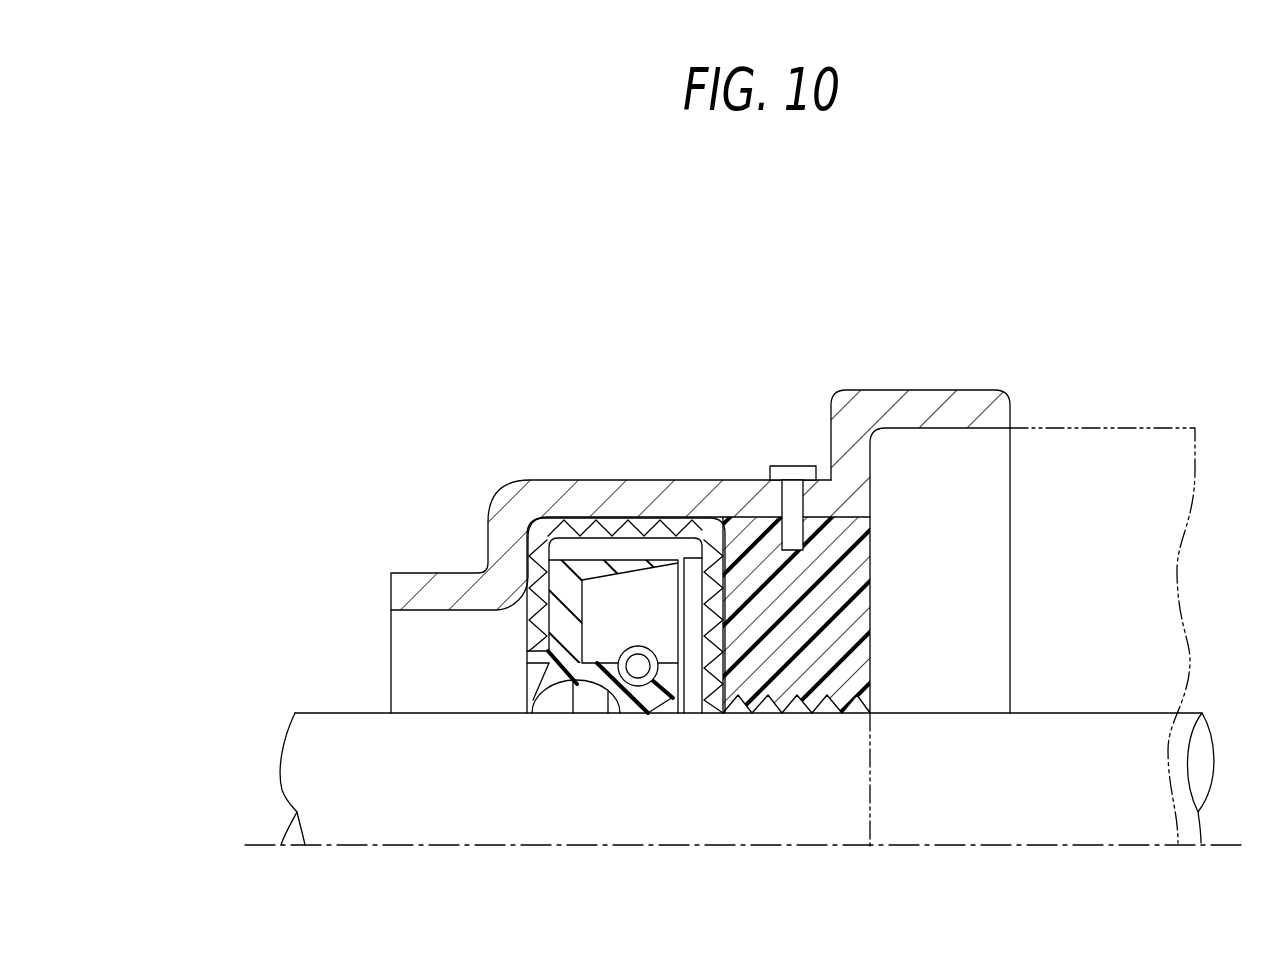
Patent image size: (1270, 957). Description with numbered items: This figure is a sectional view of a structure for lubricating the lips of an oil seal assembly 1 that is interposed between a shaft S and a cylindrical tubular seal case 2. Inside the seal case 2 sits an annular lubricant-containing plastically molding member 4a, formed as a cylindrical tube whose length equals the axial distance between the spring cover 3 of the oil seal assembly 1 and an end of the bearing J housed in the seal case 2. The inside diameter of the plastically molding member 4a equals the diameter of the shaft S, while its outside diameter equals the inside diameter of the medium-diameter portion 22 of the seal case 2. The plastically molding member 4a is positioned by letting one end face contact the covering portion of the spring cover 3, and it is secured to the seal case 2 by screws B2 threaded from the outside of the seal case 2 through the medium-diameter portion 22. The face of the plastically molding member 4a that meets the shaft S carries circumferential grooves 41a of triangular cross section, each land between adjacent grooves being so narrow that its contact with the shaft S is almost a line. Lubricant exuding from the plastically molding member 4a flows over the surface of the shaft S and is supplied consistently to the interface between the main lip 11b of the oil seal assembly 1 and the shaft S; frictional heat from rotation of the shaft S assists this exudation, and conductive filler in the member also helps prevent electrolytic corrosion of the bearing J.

The oil seal assembly 1 is at (529, 744).
The seal case 2 is at (560, 475).
The medium-diameter portion 22 is at (637, 497).
The spring cover 3 is at (700, 498).
The plastically molding member 4a is at (796, 662).
The circumferential grooves 41a is at (787, 713).
The main lip 11b is at (647, 700).
The screws B2 is at (793, 470).
The bearing J is at (1100, 427).
The shaft S is at (335, 828).